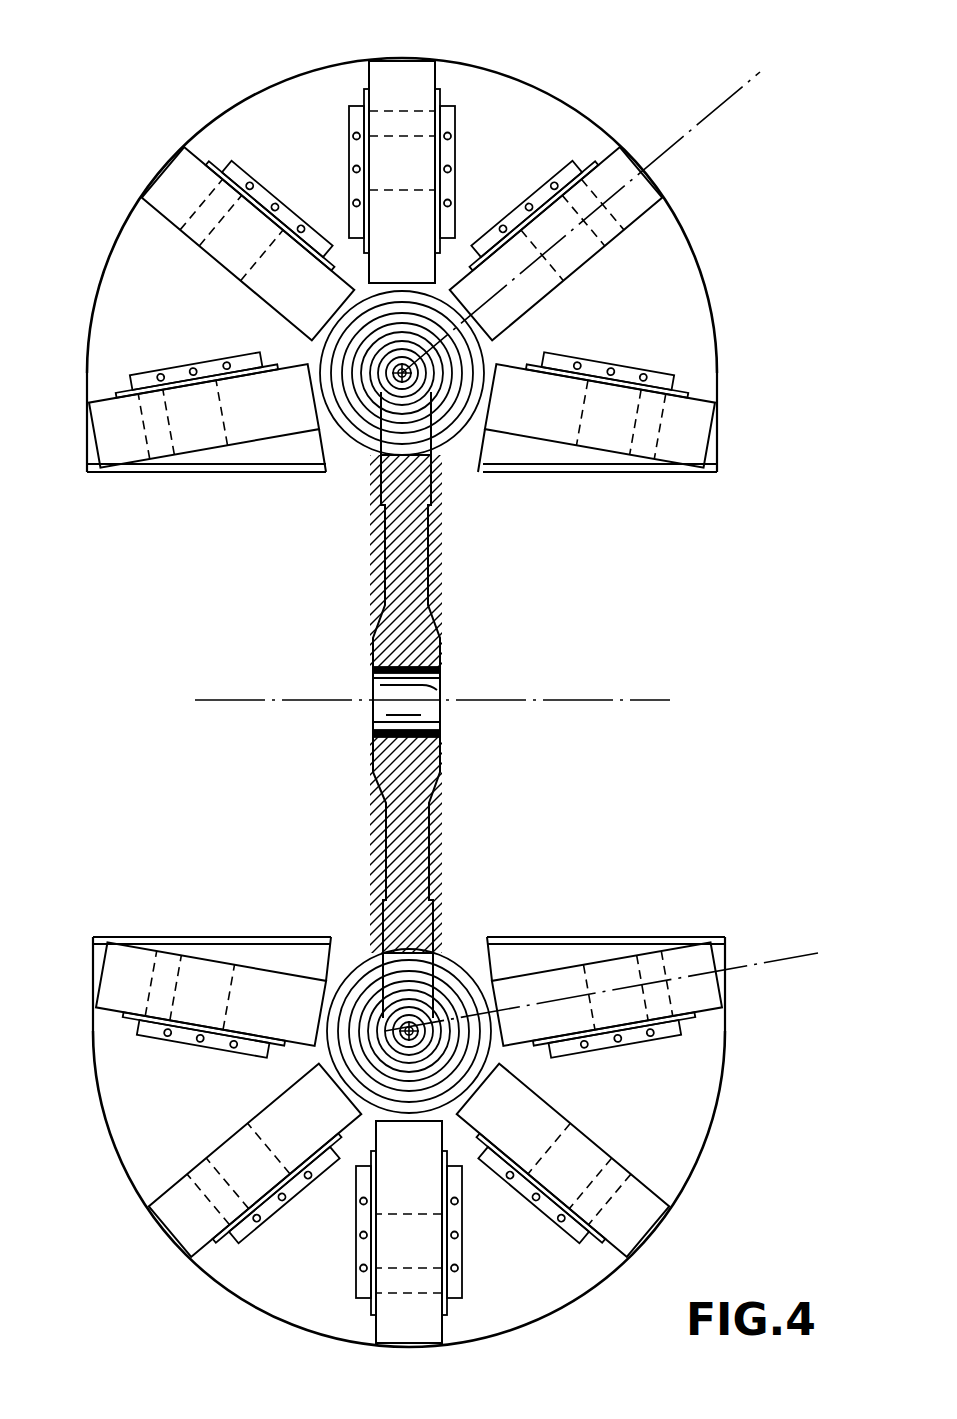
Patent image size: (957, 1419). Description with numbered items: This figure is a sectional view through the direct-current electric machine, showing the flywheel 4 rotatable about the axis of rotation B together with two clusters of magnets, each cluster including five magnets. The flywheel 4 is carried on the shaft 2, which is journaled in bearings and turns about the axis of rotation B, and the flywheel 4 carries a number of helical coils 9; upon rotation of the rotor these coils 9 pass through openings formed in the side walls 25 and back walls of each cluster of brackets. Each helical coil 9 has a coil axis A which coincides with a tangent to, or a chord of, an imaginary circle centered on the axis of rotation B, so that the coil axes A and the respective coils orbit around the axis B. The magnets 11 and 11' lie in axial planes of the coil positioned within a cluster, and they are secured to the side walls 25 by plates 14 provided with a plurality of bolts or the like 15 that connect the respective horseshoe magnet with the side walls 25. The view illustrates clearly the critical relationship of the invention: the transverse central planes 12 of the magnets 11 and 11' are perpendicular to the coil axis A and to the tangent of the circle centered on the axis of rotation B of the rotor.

The shaft 2 is at (437, 689).
The flywheel 4 is at (414, 830).
The helical coil 9 is at (365, 418).
The magnet 11 is at (203, 460).
The magnet 11' is at (602, 450).
The transverse central plane 12 is at (742, 85).
The plate 14 is at (571, 172).
The bolt 15 is at (553, 190).
The side wall 25 is at (520, 458).
The coil axis A is at (408, 388).
The axis of rotation B is at (631, 700).